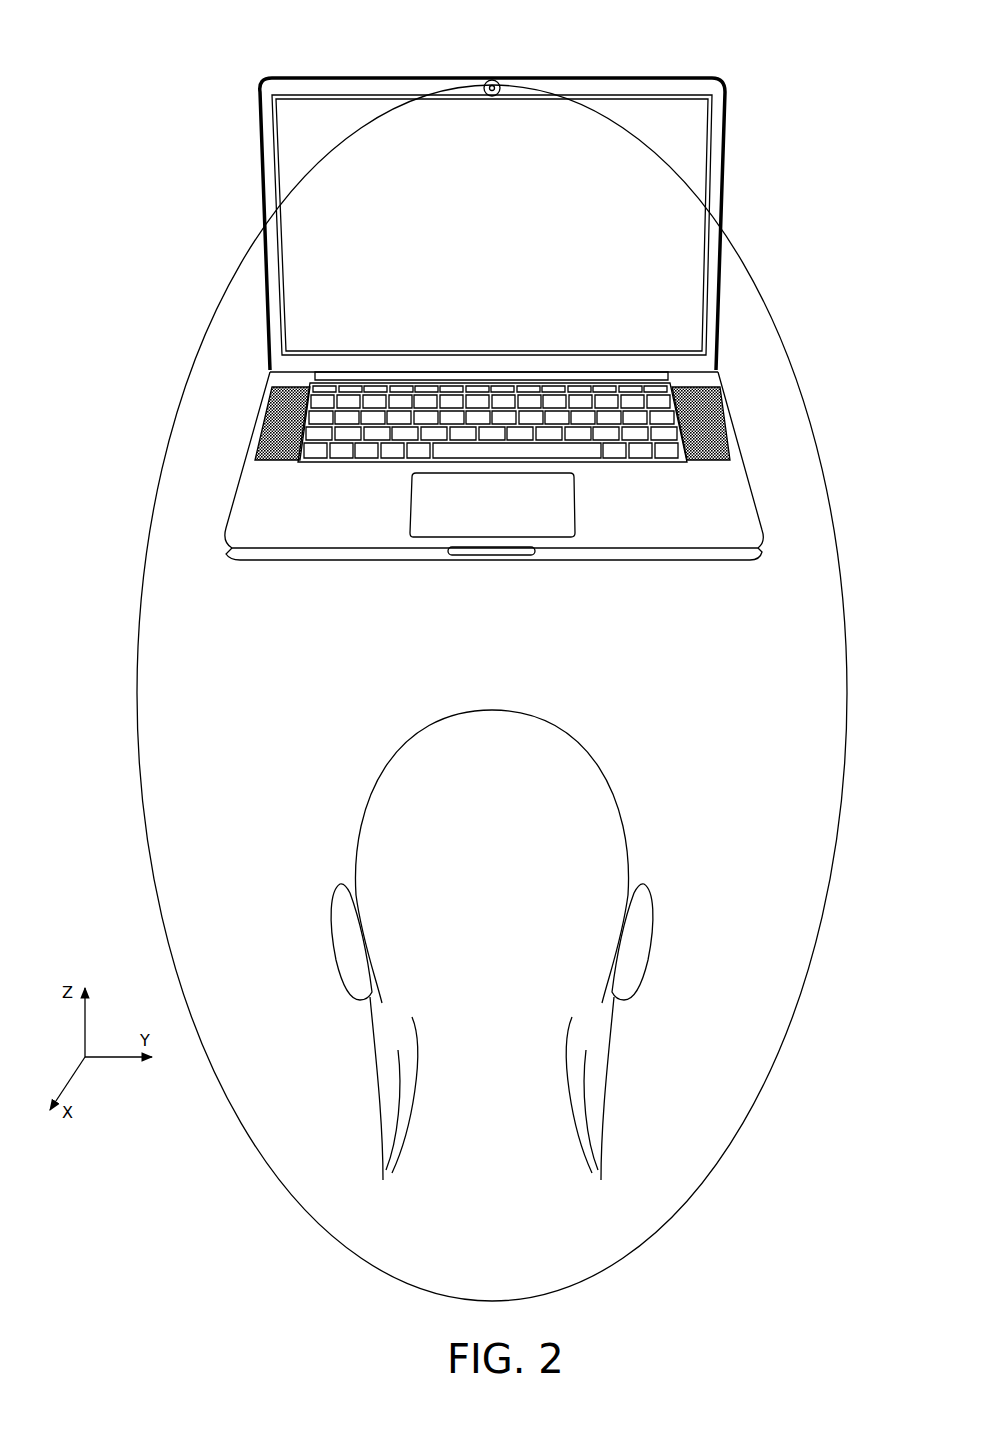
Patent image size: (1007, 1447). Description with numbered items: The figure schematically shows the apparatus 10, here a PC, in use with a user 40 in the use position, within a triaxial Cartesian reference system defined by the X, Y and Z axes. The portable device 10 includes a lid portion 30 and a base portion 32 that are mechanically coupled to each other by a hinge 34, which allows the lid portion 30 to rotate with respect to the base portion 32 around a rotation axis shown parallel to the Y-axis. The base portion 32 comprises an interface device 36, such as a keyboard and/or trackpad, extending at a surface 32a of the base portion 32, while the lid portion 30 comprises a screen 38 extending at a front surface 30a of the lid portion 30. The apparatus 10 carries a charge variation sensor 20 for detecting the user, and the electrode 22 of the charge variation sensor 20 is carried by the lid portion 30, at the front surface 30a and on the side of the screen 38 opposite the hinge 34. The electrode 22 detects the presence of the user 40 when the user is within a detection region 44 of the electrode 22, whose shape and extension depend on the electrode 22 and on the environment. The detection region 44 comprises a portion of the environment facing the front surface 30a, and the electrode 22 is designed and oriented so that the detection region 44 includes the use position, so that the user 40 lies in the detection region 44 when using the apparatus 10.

The apparatus 10 is at (205, 90).
The charge variation sensor 20 is at (471, 98).
The electrode 22 is at (492, 84).
The lid portion 30 is at (722, 117).
The front surface 30a is at (608, 195).
The base portion 32 is at (738, 466).
The surface 32a is at (649, 497).
The hinge 34 is at (400, 376).
The interface device 36 is at (583, 393).
The screen 38 is at (653, 125).
The user 40 is at (375, 790).
The detection region 44 is at (748, 742).